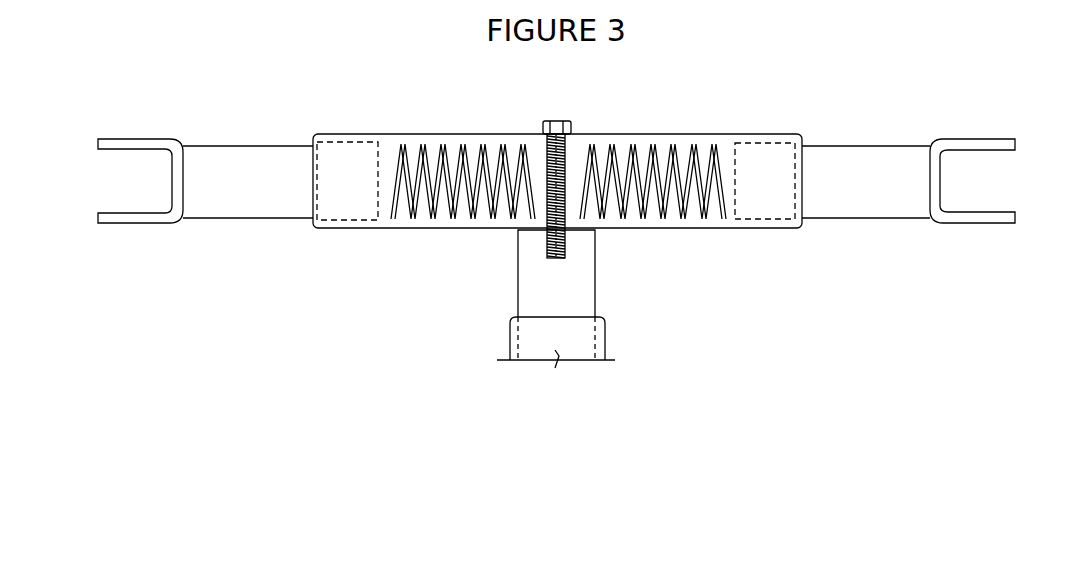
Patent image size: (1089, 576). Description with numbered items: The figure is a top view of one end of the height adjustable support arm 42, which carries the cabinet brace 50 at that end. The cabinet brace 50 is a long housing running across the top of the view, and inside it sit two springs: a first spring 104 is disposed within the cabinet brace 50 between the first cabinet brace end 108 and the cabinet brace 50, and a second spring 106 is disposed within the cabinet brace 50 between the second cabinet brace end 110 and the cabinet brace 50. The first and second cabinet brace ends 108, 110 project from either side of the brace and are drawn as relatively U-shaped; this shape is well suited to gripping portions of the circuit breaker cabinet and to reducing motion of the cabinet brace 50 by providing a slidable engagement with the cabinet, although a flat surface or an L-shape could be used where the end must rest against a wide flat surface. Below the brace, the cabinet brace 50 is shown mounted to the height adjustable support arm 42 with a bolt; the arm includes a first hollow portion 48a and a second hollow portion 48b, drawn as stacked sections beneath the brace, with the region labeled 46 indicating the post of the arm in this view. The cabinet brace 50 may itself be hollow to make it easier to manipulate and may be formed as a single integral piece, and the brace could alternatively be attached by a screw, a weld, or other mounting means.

The height adjustable support arm 42 is at (723, 97).
The support post 46 is at (620, 287).
The first hollow portion 48a is at (513, 335).
The second hollow portion 48b is at (528, 253).
The cabinet brace 50 is at (432, 132).
The first spring 104 is at (466, 150).
The second spring 106 is at (647, 147).
The first cabinet brace end 108 is at (140, 145).
The second cabinet brace end 110 is at (978, 145).